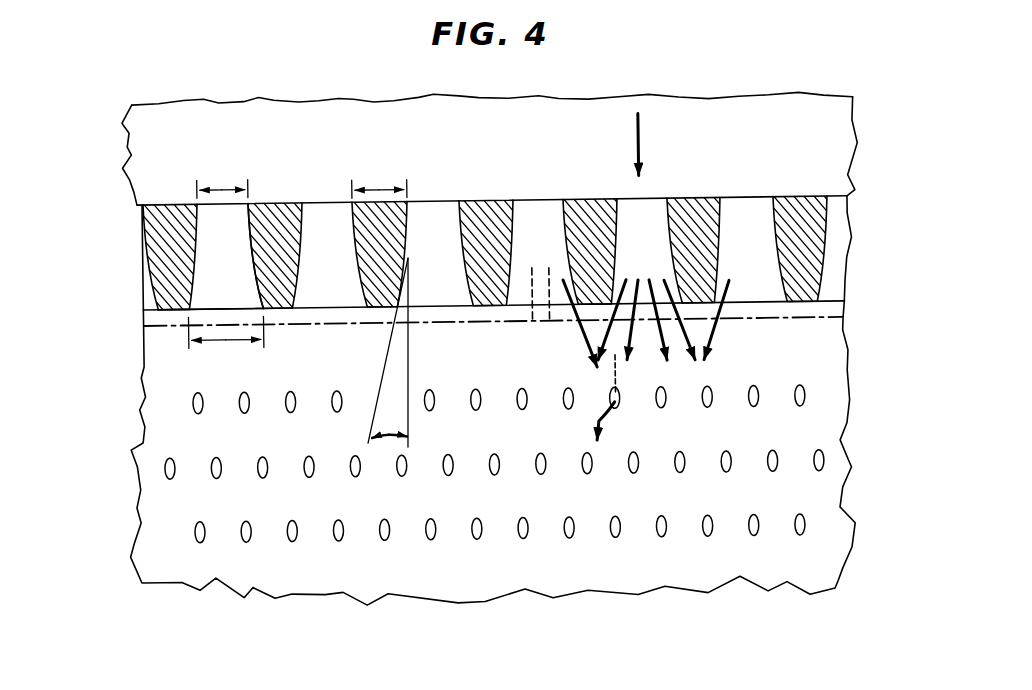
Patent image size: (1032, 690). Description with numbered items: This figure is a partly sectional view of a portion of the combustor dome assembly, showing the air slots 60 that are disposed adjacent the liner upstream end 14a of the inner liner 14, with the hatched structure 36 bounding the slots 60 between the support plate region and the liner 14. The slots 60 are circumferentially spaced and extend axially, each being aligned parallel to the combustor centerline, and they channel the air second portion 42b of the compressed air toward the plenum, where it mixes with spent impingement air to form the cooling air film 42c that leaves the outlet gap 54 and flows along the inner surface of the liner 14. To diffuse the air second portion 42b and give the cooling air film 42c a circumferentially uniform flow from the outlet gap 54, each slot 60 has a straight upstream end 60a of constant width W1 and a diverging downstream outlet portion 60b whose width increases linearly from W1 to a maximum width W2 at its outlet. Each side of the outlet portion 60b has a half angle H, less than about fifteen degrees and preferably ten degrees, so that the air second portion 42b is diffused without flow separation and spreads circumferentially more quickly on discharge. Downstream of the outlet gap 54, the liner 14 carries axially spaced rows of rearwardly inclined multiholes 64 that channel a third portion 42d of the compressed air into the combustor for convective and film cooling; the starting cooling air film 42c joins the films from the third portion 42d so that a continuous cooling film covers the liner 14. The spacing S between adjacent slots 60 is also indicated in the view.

The body member 36 is at (142, 130).
The liner upstream end 14a is at (162, 227).
The straight upstream end 60a is at (242, 220).
The diverging downstream outlet portion 60b is at (192, 292).
The air slots 60 is at (202, 261).
The inner liner 14 is at (136, 431).
The multiholes 64 is at (803, 407).
The outlet gap 54 is at (825, 327).
The air second portion 42b is at (637, 148).
The cooling air film 42c is at (712, 345).
The third portion of the compressed air 42d is at (600, 445).
The constant width W1 is at (222, 176).
The maximum width W2 is at (226, 346).
The rib spacing S is at (378, 179).
The half angle H is at (390, 449).